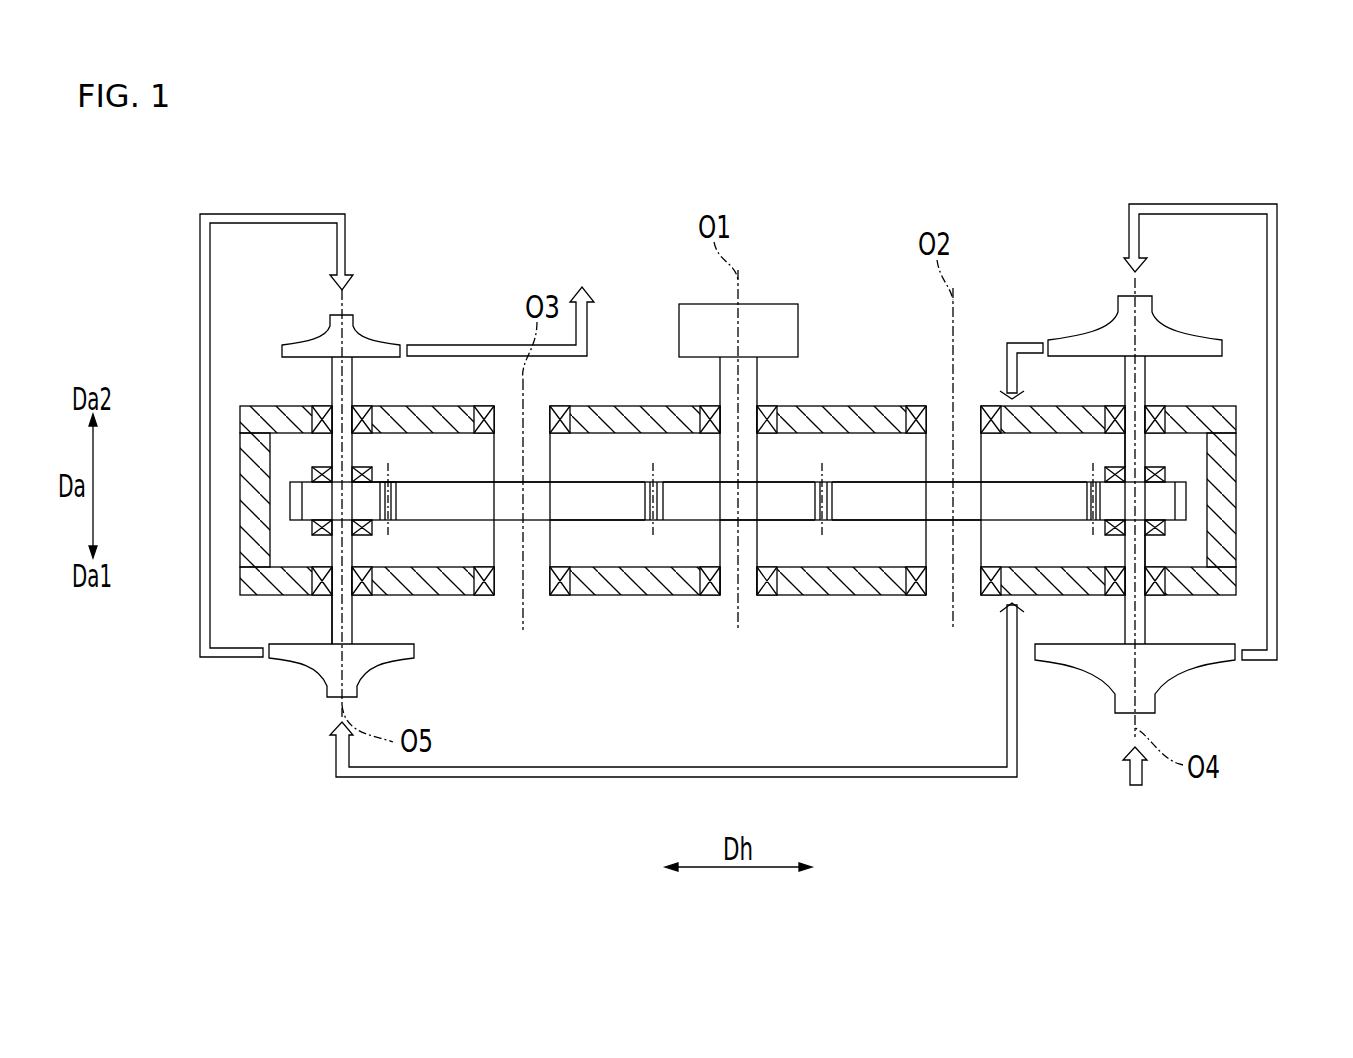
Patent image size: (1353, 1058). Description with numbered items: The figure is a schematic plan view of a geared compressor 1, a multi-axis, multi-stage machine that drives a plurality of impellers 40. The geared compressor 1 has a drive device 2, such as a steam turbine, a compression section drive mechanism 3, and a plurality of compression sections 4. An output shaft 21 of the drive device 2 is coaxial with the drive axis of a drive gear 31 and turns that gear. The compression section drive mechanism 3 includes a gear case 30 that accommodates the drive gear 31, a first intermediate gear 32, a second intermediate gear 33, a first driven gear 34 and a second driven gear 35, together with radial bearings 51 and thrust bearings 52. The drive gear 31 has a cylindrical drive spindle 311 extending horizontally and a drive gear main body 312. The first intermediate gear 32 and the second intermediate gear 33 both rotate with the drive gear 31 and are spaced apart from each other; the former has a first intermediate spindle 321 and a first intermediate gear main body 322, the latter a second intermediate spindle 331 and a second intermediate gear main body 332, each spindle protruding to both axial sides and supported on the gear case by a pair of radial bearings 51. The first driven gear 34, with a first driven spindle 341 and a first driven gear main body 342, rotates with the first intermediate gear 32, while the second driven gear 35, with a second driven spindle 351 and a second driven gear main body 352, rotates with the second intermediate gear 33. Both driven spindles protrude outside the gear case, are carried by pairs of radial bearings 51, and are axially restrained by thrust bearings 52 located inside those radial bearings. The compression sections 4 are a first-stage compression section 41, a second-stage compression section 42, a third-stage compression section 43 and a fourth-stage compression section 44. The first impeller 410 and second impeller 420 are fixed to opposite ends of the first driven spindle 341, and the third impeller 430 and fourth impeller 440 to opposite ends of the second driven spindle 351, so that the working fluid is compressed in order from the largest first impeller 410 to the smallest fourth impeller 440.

The geared compressor 1 is at (1240, 158).
The drive device 2 is at (773, 401).
The output shaft 21 is at (748, 367).
The compression section drive mechanism 3 is at (738, 519).
The gear case 30 is at (285, 418).
The drive gear 31 is at (785, 482).
The drive spindle 311 is at (728, 585).
The drive gear main body 312 is at (793, 505).
The first intermediate gear 32 is at (875, 520).
The first intermediate spindle 321 is at (967, 583).
The first intermediate gear main body 322 is at (866, 495).
The second intermediate gear 33 is at (572, 482).
The second intermediate spindle 331 is at (508, 583).
The second intermediate gear main body 332 is at (607, 505).
The first driven gear 34 is at (1236, 500).
The first driven spindle 341 is at (1140, 452).
The first driven gear main body 342 is at (1165, 503).
The second driven gear 35 is at (241, 537).
The second driven spindle 351 is at (335, 620).
The second driven gear main body 352 is at (310, 507).
The compression section 4 is at (752, 513).
The impeller 40 is at (760, 494).
The first-stage compression section 41 is at (1091, 689).
The first impeller 410 is at (1175, 680).
The second-stage compression section 42 is at (1086, 326).
The second impeller 420 is at (1162, 318).
The third-stage compression section 43 is at (376, 685).
The third impeller 430 is at (305, 672).
The fourth-stage compression section 44 is at (368, 327).
The fourth impeller 440 is at (305, 340).
The radial bearing 51 is at (322, 432).
The thrust bearing 52 is at (318, 472).